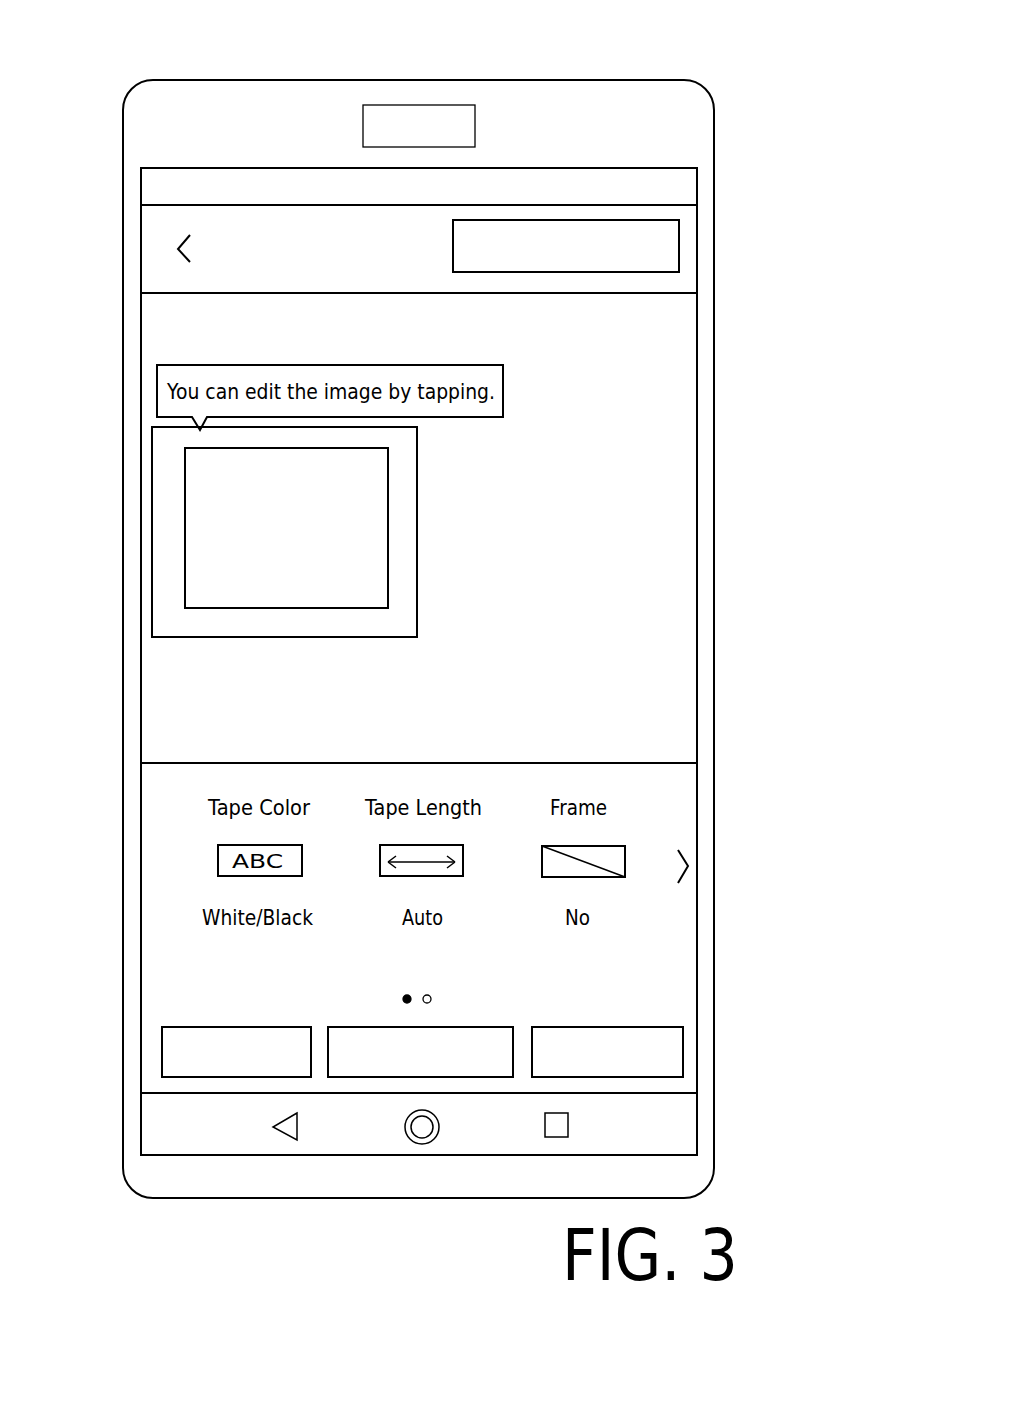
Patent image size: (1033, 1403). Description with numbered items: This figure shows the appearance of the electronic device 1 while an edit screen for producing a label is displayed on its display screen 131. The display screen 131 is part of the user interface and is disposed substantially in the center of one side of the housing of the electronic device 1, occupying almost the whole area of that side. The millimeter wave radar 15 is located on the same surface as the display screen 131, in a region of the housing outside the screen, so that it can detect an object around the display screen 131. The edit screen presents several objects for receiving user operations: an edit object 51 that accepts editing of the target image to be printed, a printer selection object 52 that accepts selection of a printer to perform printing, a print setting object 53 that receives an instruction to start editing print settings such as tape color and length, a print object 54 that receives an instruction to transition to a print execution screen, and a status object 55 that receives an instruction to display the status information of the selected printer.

The electronic device 1 is at (254, 79).
The millimeter wave radar 15 is at (408, 118).
The display screen 131 is at (600, 167).
The edit object 51 is at (165, 493).
The printer selection object 52 is at (668, 250).
The print setting object 53 is at (186, 1040).
The print object 54 is at (478, 1037).
The status object 55 is at (630, 1037).